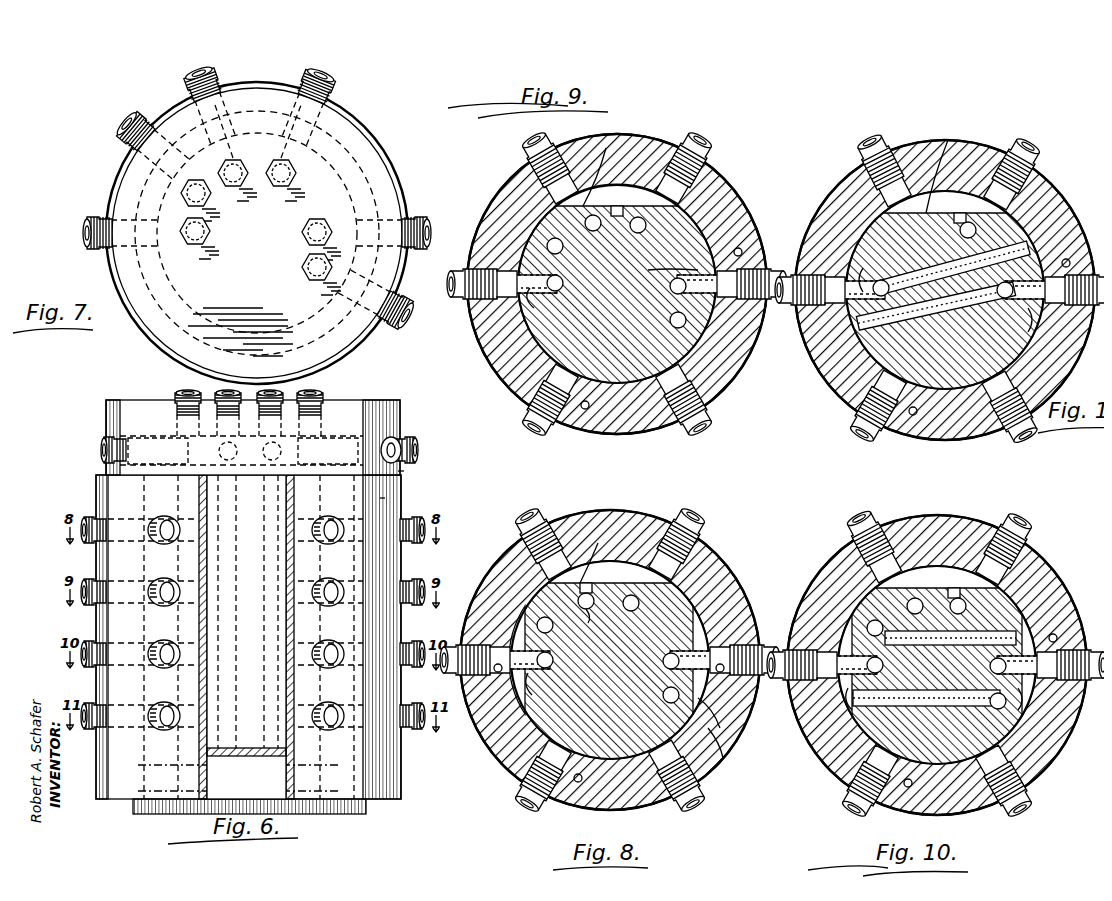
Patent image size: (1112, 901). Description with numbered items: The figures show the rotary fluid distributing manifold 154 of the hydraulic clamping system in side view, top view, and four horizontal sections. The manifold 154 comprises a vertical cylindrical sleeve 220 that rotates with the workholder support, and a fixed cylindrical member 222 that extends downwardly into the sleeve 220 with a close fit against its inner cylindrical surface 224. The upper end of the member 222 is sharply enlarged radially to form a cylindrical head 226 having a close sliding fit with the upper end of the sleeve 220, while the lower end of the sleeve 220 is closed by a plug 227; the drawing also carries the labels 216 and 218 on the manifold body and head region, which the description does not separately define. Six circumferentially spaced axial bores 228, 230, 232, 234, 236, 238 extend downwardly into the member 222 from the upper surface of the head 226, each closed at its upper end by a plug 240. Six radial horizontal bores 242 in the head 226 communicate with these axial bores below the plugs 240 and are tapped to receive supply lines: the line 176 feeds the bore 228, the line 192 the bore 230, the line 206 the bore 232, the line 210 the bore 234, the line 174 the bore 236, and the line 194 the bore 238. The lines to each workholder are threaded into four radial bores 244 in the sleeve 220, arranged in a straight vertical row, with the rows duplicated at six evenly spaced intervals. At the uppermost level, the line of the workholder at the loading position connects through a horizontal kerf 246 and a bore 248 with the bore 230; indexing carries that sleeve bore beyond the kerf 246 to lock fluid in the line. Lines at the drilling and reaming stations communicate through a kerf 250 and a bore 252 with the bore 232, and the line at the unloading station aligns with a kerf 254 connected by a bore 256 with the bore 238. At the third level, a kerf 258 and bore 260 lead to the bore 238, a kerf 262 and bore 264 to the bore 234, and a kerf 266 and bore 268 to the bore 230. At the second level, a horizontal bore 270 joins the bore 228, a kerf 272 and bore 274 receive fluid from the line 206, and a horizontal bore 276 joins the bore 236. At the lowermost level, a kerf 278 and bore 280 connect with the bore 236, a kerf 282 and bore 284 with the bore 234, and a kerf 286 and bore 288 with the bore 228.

In FIG. 6, the manifold 154 is at (361, 387).
In FIG. 7, the line 174 is at (416, 206).
In FIG. 6, the line 174 is at (410, 438).
In FIG. 7, the line 176 is at (88, 238).
In FIG. 6, the line 176 is at (94, 441).
In FIG. 7, the line 192 is at (110, 163).
In FIG. 7, the line 194 is at (378, 311).
In FIG. 6, the line 194 is at (398, 464).
In FIG. 7, the line 206 is at (177, 90).
In FIG. 7, the line 210 is at (293, 73).
In FIG. 7, the valve housing 216 is at (165, 347).
In FIG. 6, the valve housing 216 is at (378, 490).
In FIG. 6, the housing head 218 is at (385, 408).
In FIG. 6, the sleeve 220 is at (380, 779).
In FIG. 9, the sleeve 220 is at (612, 412).
In FIG. 11, the sleeve 220 is at (945, 290).
In FIG. 8, the sleeve 220 is at (610, 800).
In FIG. 10, the sleeve 220 is at (937, 665).
In FIG. 6, the cylindrical member 222 is at (254, 627).
In FIG. 9, the cylindrical member 222 is at (625, 307).
In FIG. 11, the cylindrical member 222 is at (955, 245).
In FIG. 8, the cylindrical member 222 is at (613, 727).
In FIG. 10, the cylindrical member 222 is at (948, 674).
In FIG. 9, the inner cylindrical surface 224 is at (620, 140).
In FIG. 8, the inner cylindrical surface 224 is at (735, 592).
In FIG. 7, the cylindrical head 226 is at (167, 305).
In FIG. 6, the cylindrical head 226 is at (106, 404).
In FIG. 6, the plug 227 is at (262, 799).
In FIG. 7, the axial bore 228 is at (196, 243).
In FIG. 6, the axial bore 228 is at (171, 454).
In FIG. 9, the axial bore 228 is at (556, 273).
In FIG. 11, the axial bore 228 is at (868, 272).
In FIG. 8, the axial bore 228 is at (545, 656).
In FIG. 10, the axial bore 228 is at (875, 665).
In FIG. 7, the axial bore 230 is at (208, 193).
In FIG. 9, the axial bore 230 is at (553, 242).
In FIG. 8, the axial bore 230 is at (545, 622).
In FIG. 10, the axial bore 230 is at (900, 604).
In FIG. 7, the axial bore 232 is at (227, 138).
In FIG. 6, the axial bore 232 is at (217, 451).
In FIG. 9, the axial bore 232 is at (590, 222).
In FIG. 8, the axial bore 232 is at (604, 620).
In FIG. 7, the axial bore 234 is at (281, 132).
In FIG. 6, the axial bore 234 is at (283, 451).
In FIG. 9, the axial bore 234 is at (638, 218).
In FIG. 11, the axial bore 234 is at (968, 224).
In FIG. 8, the axial bore 234 is at (630, 599).
In FIG. 10, the axial bore 234 is at (957, 602).
In FIG. 7, the axial bore 236 is at (294, 228).
In FIG. 9, the axial bore 236 is at (662, 281).
In FIG. 11, the axial bore 236 is at (970, 305).
In FIG. 8, the axial bore 236 is at (655, 653).
In FIG. 10, the axial bore 236 is at (998, 666).
In FIG. 7, the axial bore 238 is at (331, 259).
In FIG. 6, the axial bore 238 is at (294, 456).
In FIG. 9, the axial bore 238 is at (663, 316).
In FIG. 8, the axial bore 238 is at (655, 688).
In FIG. 10, the axial bore 238 is at (985, 700).
In FIG. 7, the plug 240 is at (286, 159).
In FIG. 6, the plug 240 is at (208, 384).
In FIG. 7, the horizontal bore 242 is at (336, 116).
In FIG. 6, the radial bore 244 is at (235, 623).
In FIG. 8, the horizontal kerf 246 is at (528, 690).
In FIG. 8, the bore 248 is at (570, 593).
In FIG. 8, the horizontal kerf 250 is at (599, 555).
In FIG. 8, the horizontal bore 252 is at (582, 575).
In FIG. 8, the horizontal kerf 254 is at (716, 718).
In FIG. 8, the horizontal bore 256 is at (716, 750).
In FIG. 10, the horizontal kerf 258 is at (838, 690).
In FIG. 10, the horizontal bore 260 is at (870, 700).
In FIG. 10, the horizontal kerf 262 is at (940, 555).
In FIG. 10, the horizontal bore 264 is at (955, 575).
In FIG. 10, the horizontal kerf 266 is at (1018, 690).
In FIG. 10, the horizontal bore 268 is at (930, 638).
In FIG. 9, the horizontal bore 270 is at (530, 300).
In FIG. 9, the kerf 272 is at (604, 140).
In FIG. 9, the horizontal bore 274 is at (607, 197).
In FIG. 9, the horizontal bore 276 is at (662, 261).
In FIG. 11, the horizontal kerf 278 is at (850, 260).
In FIG. 11, the horizontal bore 280 is at (893, 320).
In FIG. 11, the horizontal kerf 282 is at (940, 132).
In FIG. 11, the horizontal bore 284 is at (950, 204).
In FIG. 11, the horizontal kerf 286 is at (1049, 330).
In FIG. 11, the horizontal bore 288 is at (953, 268).